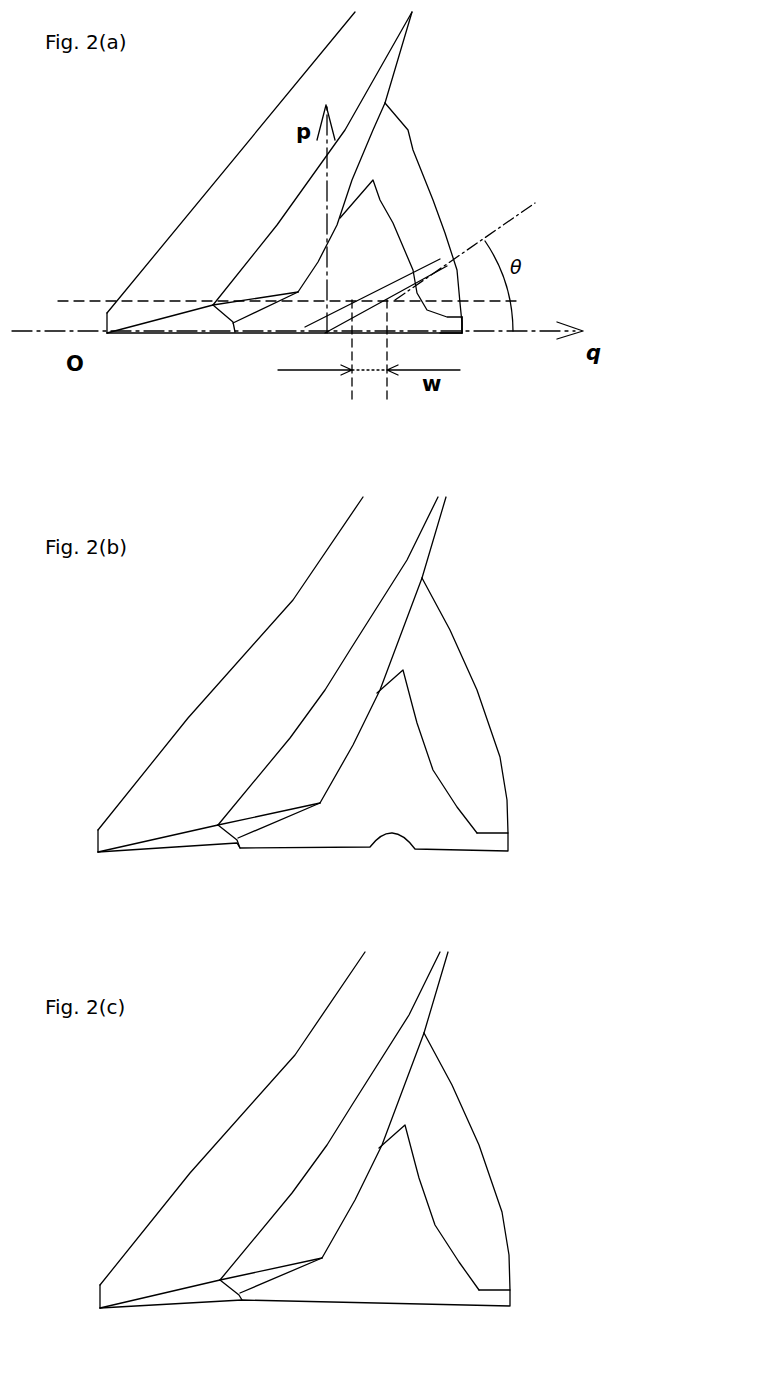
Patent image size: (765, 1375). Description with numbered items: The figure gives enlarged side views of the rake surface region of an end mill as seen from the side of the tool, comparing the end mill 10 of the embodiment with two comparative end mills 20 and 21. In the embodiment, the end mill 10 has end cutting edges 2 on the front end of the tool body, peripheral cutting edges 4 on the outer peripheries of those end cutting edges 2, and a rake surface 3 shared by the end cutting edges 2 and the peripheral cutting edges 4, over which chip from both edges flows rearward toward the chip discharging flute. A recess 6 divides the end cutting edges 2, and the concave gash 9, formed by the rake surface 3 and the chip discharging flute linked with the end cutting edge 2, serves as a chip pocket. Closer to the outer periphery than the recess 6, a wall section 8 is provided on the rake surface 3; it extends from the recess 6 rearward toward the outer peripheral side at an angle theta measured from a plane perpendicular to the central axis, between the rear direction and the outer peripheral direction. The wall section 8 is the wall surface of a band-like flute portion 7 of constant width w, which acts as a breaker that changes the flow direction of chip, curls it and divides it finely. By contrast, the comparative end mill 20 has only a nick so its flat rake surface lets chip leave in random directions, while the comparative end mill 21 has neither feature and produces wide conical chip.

In FIG. 2A, the end cutting edge 2 is at (232, 327).
In FIG. 2A, the rake surface 3 is at (397, 150).
In FIG. 2A, the peripheral cutting edge 4 is at (466, 318).
In FIG. 2A, the recess 6 is at (313, 326).
In FIG. 2A, the flute portion 7 is at (362, 256).
In FIG. 2A, the wall section 8 is at (357, 300).
In FIG. 2A, the gash 9 is at (413, 276).
In FIG. 2A, the end mill 10 is at (490, 119).
In FIG. 2B, the end mill 20 is at (496, 642).
In FIG. 2C, the end mill 21 is at (476, 1077).